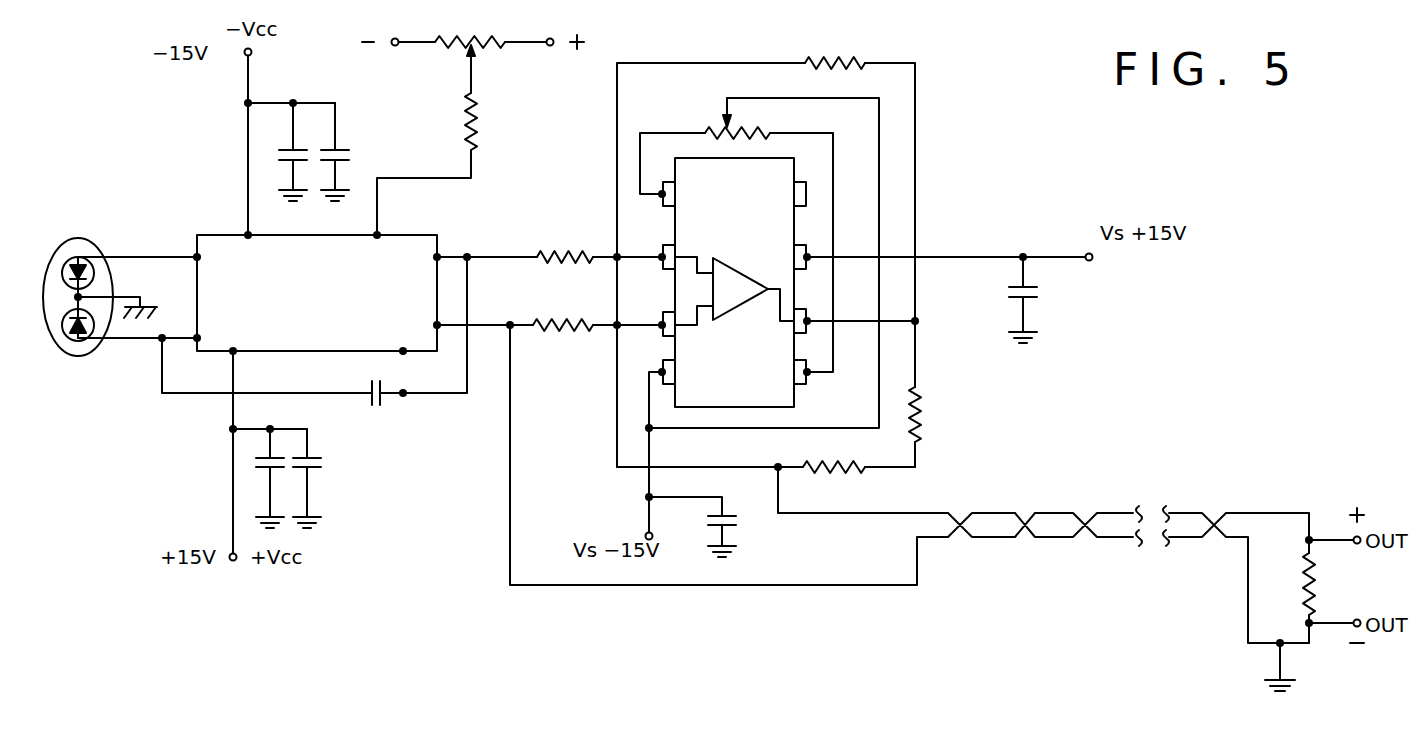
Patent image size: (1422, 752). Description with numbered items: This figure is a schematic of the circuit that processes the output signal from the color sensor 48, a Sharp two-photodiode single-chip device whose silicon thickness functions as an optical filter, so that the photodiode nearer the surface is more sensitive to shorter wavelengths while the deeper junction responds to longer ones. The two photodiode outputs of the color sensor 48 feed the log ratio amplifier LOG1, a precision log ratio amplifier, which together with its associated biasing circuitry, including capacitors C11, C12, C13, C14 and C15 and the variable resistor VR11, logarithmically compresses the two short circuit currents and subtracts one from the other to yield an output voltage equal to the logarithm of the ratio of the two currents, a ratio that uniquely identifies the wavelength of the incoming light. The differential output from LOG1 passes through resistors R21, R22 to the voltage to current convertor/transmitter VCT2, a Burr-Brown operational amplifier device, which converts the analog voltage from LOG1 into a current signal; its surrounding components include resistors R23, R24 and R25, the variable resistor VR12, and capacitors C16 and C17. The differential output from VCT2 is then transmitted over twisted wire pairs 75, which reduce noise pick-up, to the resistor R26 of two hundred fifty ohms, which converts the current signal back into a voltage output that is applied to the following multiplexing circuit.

The color sensor 48 is at (93, 237).
The twisted wire pairs 75 is at (1066, 513).
The log ratio amplifier LOG1 is at (317, 293).
The voltage to current convertor/transmitter VCT2 is at (734, 282).
The capacitor C11 is at (340, 150).
The capacitor C12 is at (317, 468).
The capacitor C13 is at (282, 150).
The capacitor C14 is at (262, 468).
The capacitor C15 is at (371, 404).
The capacitor C16 is at (730, 516).
The capacitor C17 is at (1038, 297).
The resistor R21 is at (581, 250).
The resistor R22 is at (560, 331).
The resistor R23 is at (850, 62).
The resistor R24 is at (810, 470).
The resistor R25 is at (925, 419).
The resistor R26 is at (481, 111).
The variable resistor VR11 is at (510, 5).
The variable resistor VR12 is at (744, 128).